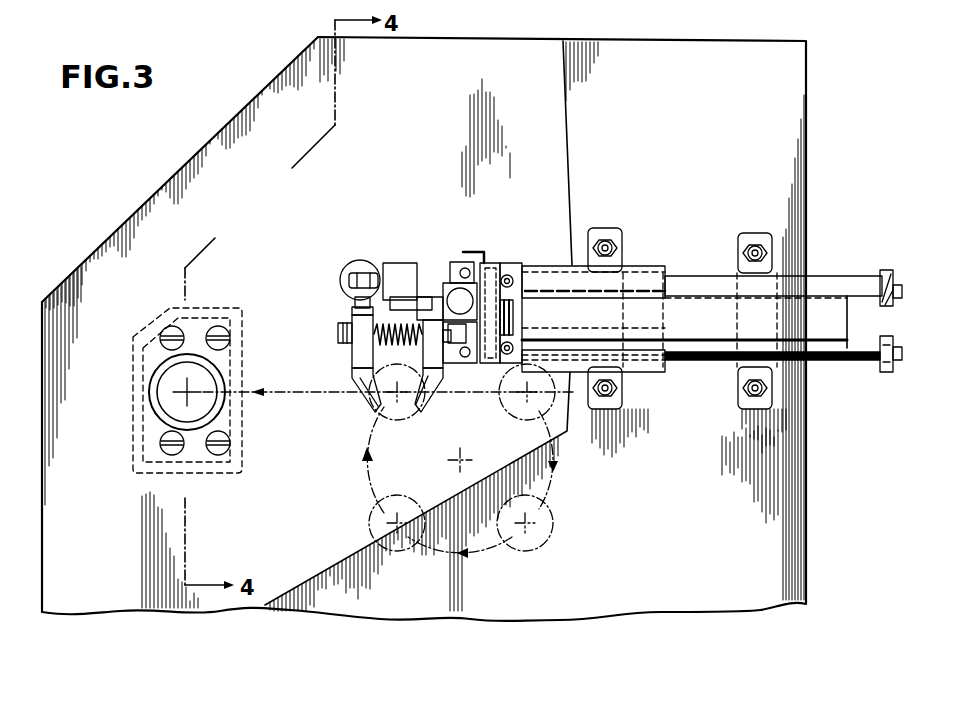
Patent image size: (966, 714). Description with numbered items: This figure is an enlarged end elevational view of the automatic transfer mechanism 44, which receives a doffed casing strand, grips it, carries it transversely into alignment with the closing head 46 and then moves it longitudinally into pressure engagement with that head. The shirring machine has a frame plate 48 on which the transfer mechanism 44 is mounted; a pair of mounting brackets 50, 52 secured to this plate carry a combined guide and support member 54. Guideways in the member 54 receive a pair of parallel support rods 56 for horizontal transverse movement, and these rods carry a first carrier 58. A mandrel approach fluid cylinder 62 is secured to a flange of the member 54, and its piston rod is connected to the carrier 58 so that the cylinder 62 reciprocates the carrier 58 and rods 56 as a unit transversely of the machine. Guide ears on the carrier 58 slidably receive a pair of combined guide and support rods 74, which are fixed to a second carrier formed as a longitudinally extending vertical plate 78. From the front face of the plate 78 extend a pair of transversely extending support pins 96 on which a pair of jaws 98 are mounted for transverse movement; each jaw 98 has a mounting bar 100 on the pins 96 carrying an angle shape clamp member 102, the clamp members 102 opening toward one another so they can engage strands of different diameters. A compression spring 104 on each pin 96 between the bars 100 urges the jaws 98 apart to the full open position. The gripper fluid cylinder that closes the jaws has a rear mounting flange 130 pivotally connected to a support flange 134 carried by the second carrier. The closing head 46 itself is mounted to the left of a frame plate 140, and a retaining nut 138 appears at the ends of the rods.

The transfer mechanism 44 is at (836, 250).
The closing head 46 is at (216, 352).
The frame plate 48 is at (804, 136).
The mounting bracket 50 is at (622, 228).
The mounting bracket 52 is at (758, 232).
The combined guide and support member 54 is at (665, 268).
The support rod 56 is at (707, 277).
The first carrier 58 is at (498, 255).
The mandrel approach fluid cylinder 62 is at (814, 323).
The combined guide and support rod 74 is at (464, 262).
The vertical plate 78 is at (436, 272).
The support pin 96 is at (350, 320).
The jaw 98 is at (346, 379).
The mounting bar 100 is at (353, 332).
The angle shape clamp member 102 is at (363, 402).
The compression spring 104 is at (382, 348).
The rear mounting flange 130 is at (355, 270).
The support flange 134 is at (392, 264).
The retaining nut 138 is at (888, 270).
The frame plate 140 is at (290, 85).